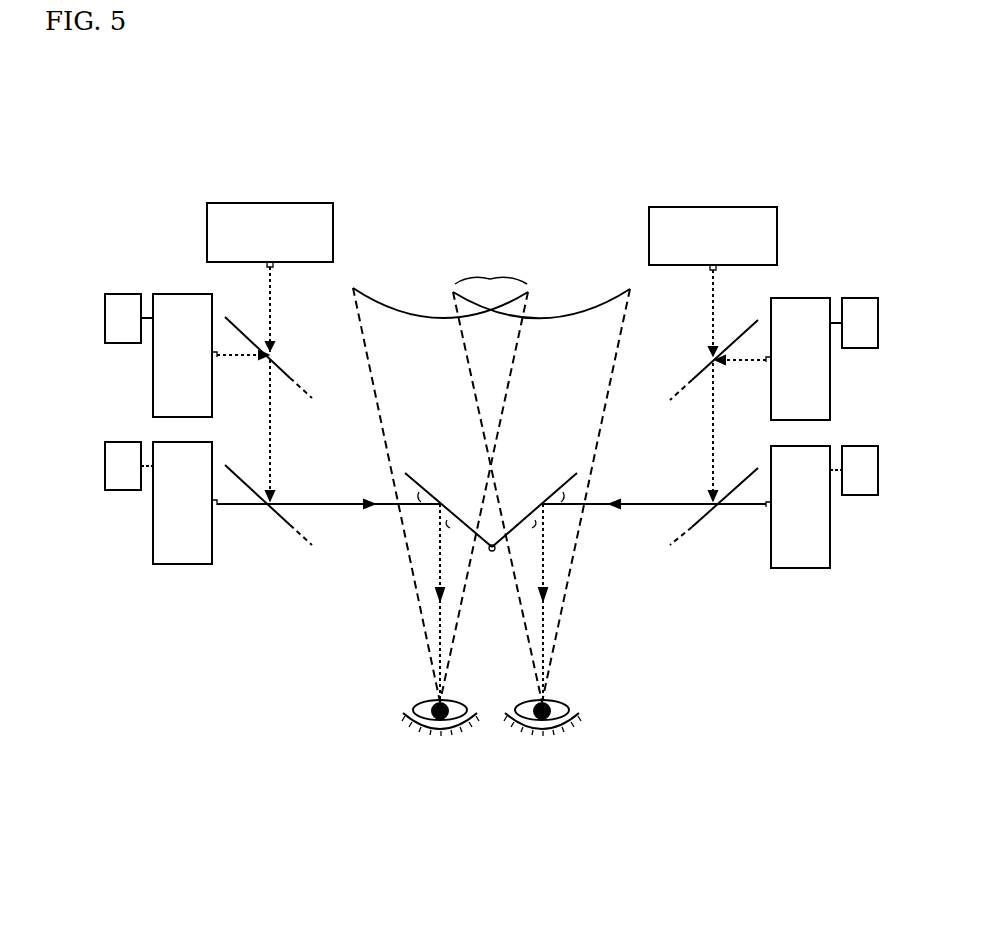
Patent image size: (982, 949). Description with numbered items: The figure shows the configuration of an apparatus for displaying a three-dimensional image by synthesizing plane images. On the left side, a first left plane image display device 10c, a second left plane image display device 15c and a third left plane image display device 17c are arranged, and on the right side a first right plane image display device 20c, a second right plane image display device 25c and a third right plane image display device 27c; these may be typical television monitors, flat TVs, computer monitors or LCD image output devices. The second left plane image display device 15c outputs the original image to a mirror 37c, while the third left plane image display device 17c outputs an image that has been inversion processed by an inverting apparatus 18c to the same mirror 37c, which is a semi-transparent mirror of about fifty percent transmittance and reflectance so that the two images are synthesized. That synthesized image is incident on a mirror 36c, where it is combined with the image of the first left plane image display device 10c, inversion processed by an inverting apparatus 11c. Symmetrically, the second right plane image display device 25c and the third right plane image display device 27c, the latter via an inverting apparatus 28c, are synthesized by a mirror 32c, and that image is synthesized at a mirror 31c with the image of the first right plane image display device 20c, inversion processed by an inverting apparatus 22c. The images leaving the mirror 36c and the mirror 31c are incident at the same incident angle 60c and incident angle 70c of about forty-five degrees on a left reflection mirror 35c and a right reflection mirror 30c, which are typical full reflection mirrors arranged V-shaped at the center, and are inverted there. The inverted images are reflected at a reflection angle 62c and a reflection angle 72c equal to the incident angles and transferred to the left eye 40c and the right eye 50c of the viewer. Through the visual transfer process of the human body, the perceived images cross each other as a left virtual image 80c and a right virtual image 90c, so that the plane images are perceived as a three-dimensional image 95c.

The first left plane image display device 10c is at (188, 565).
The inverting apparatus 11c is at (122, 485).
The second left plane image display device 15c is at (243, 205).
The third left plane image display device 17c is at (175, 296).
The inverting apparatus 18c is at (121, 295).
The first right plane image display device 20c is at (796, 568).
The inverting apparatus 22c is at (864, 495).
The second right plane image display device 25c is at (741, 208).
The third right plane image display device 27c is at (808, 300).
The inverting apparatus 28c is at (862, 300).
The right reflection mirror 30c is at (567, 483).
The mirror 31c is at (683, 535).
The mirror 32c is at (690, 380).
The left reflection mirror 35c is at (417, 483).
The mirror 36c is at (310, 530).
The mirror 37c is at (292, 378).
The left eye 40c is at (435, 737).
The right eye 50c is at (545, 737).
The incident angle 60c is at (405, 515).
The reflection angle 62c is at (440, 623).
The incident angle 70c is at (575, 515).
The reflection angle 72c is at (543, 625).
The left virtual image 80c is at (380, 305).
The right virtual image 90c is at (600, 305).
The three-dimensional image 95c is at (491, 265).